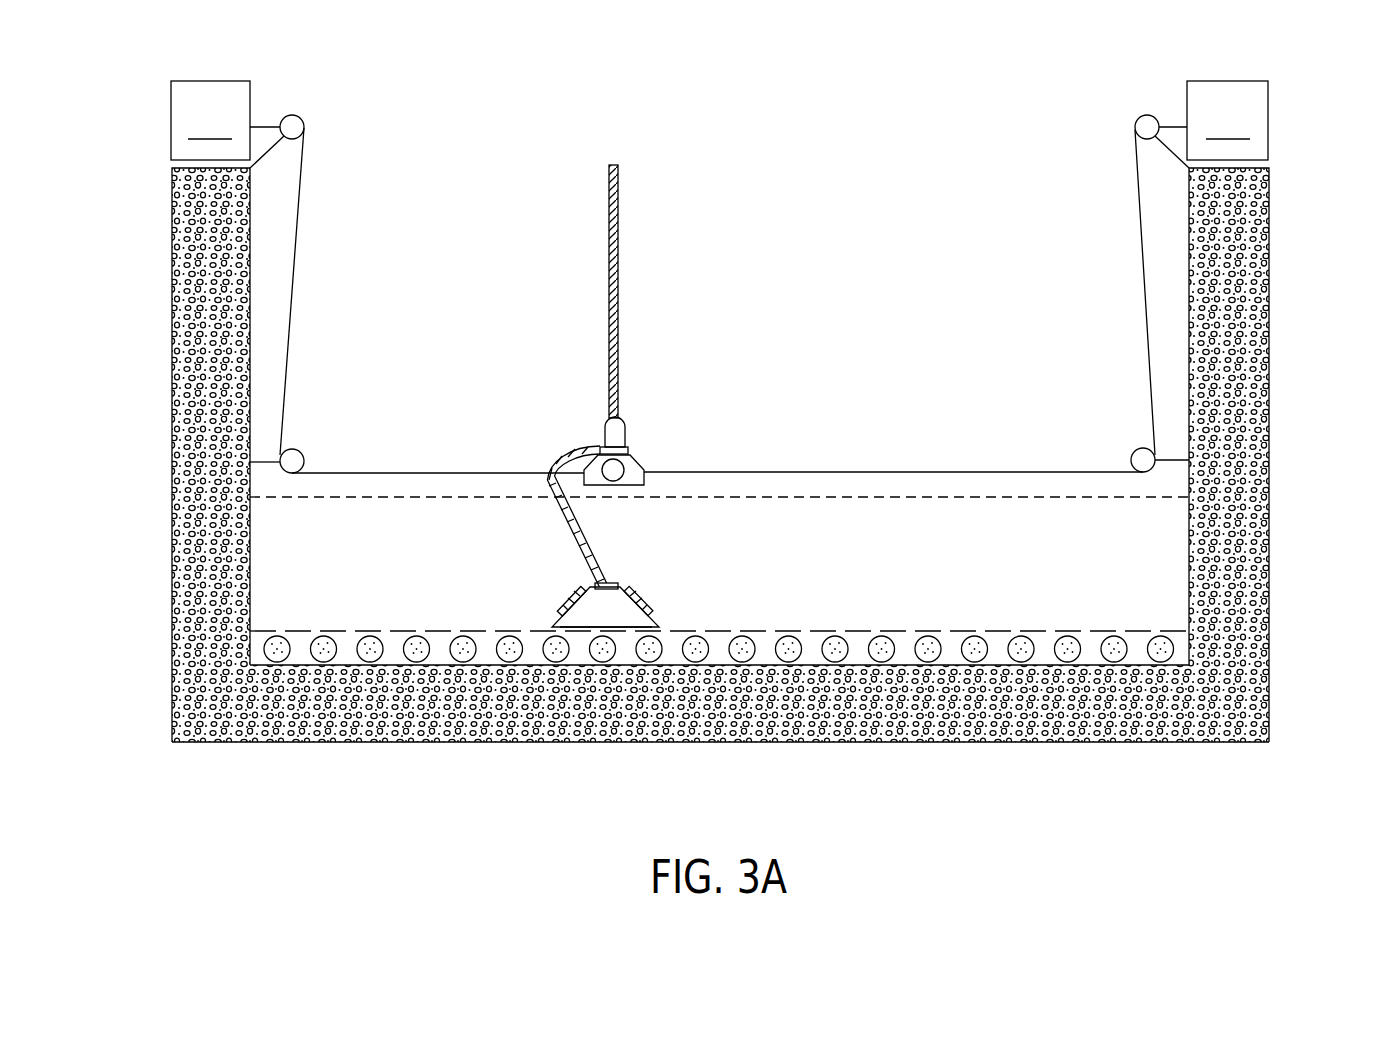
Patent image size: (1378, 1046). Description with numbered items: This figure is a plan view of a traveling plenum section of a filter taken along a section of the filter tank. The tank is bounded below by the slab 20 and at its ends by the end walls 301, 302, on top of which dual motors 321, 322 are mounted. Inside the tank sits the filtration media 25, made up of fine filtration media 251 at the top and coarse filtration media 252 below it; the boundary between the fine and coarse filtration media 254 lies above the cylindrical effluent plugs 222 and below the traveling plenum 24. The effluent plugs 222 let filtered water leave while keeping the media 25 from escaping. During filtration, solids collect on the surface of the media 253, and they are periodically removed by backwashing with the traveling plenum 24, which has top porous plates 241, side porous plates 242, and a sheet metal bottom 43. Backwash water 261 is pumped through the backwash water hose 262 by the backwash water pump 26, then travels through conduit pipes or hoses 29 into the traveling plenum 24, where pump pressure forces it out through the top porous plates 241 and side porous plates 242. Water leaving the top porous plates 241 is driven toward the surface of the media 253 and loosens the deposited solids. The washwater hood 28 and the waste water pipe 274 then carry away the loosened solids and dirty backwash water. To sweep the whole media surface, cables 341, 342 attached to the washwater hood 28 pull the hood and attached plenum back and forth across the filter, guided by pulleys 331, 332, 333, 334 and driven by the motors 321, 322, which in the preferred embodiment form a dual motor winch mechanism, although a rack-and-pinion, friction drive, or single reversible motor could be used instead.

The slab 20 is at (887, 715).
The traveling plenum 24 is at (590, 606).
The filtration media 25 is at (1093, 539).
The backwash water pump 26 is at (615, 432).
The washwater hood 28 is at (640, 461).
The conduit pipes or hoses 29 is at (565, 522).
The sheet metal bottom 43 is at (605, 627).
The effluent plug 222 is at (323, 650).
The top porous plates 241 is at (618, 583).
The side porous plates 242 is at (641, 597).
The fine filtration media 251 is at (750, 565).
The coarse filtration media 252 is at (1043, 634).
The surface of the media 253 is at (500, 497).
The boundary between the fine and coarse filtration media 254 is at (390, 630).
The backwash water 261 is at (613, 146).
The backwash water hose 262 is at (619, 262).
The waste water pipe 274 is at (607, 466).
The end wall 301 is at (190, 300).
The end wall 302 is at (1262, 300).
The motor 321 is at (227, 124).
The motor 322 is at (1211, 124).
The pulley 331 is at (298, 126).
The pulley 332 is at (296, 462).
The pulley 333 is at (1141, 459).
The pulley 334 is at (1147, 127).
The cable 341 is at (297, 248).
The cable 342 is at (875, 472).